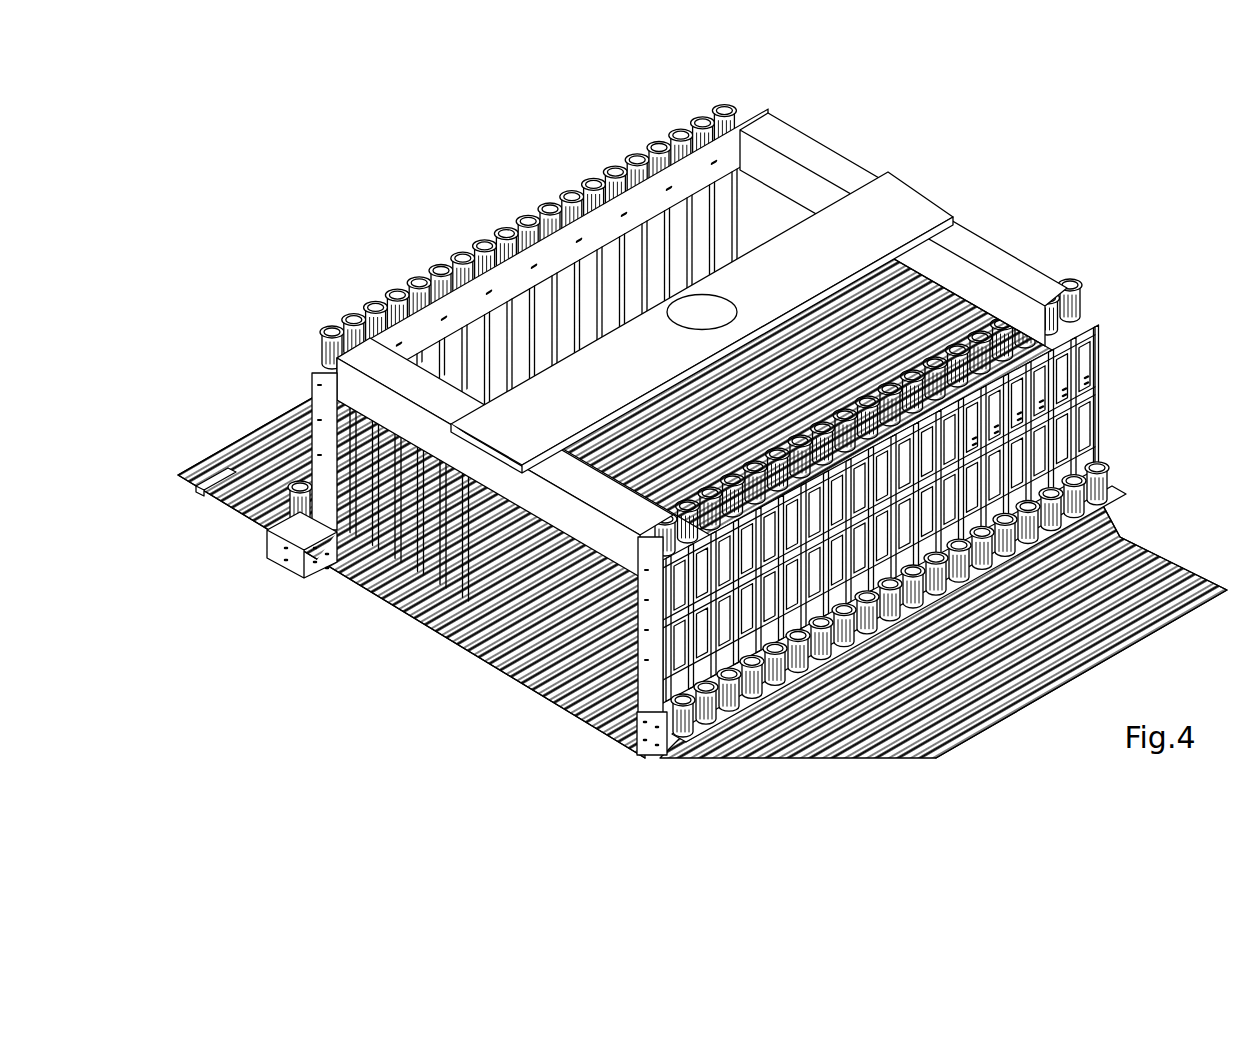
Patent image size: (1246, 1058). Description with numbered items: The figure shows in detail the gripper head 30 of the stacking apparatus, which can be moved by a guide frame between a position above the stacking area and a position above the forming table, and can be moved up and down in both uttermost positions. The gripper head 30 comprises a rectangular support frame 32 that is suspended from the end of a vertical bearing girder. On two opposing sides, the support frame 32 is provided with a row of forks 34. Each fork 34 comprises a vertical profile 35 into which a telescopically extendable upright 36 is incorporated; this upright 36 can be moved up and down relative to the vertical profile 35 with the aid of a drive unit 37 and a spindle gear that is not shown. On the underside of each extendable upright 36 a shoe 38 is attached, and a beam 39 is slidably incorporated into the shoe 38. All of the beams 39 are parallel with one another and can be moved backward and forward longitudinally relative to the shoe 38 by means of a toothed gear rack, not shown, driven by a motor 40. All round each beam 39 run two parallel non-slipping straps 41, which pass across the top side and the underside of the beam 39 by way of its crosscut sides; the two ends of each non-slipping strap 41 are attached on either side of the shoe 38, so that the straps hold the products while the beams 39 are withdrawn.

The gripper head 30 is at (905, 200).
The support frame 32 is at (818, 152).
The fork 34 is at (1082, 380).
The vertical profile 35 is at (310, 404).
The telescopically extendable upright 36 is at (1080, 430).
The drive unit 37 is at (355, 312).
The shoe 38 is at (305, 555).
The beam 39 is at (1165, 560).
The motor 40 is at (1107, 466).
The non-slipping strap 41 is at (227, 493).